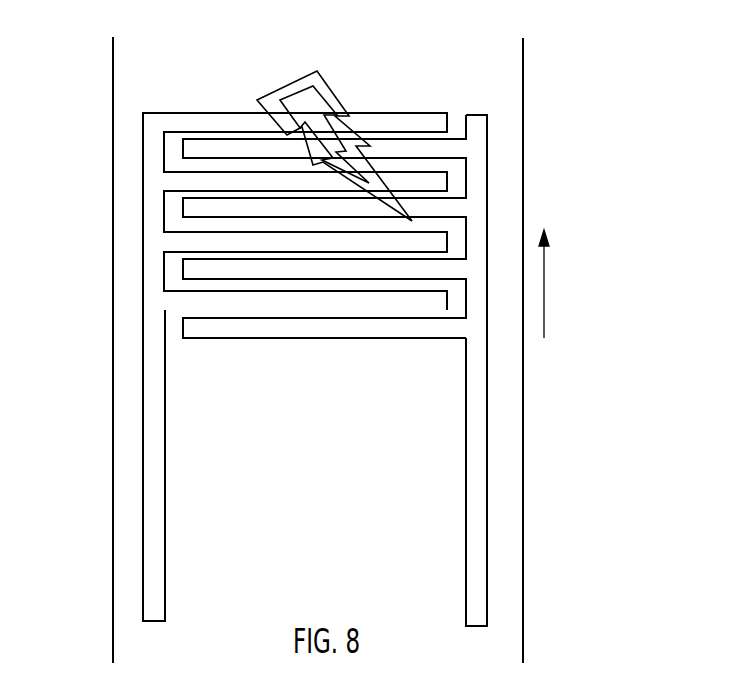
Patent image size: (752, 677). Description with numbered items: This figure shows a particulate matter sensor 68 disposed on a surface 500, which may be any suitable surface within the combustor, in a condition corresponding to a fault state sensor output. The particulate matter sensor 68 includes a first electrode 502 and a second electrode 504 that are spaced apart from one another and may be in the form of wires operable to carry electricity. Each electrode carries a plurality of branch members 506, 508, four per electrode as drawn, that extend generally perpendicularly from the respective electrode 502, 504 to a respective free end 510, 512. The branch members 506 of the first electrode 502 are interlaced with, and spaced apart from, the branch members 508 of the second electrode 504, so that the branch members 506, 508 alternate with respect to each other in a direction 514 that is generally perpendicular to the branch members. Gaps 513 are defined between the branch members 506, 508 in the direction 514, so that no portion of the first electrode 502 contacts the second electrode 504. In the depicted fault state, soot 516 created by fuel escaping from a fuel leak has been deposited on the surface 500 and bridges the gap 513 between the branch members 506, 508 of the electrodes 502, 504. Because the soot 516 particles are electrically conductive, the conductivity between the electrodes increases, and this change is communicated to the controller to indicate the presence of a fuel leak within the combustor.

The particulate matter sensor 68 is at (152, 59).
The surface 500 is at (500, 53).
The first electrode 502 is at (165, 545).
The second electrode 504 is at (467, 523).
The branch members of the first electrode 506 is at (271, 180).
The branch members of the second electrode 508 is at (333, 272).
The free end 510 is at (447, 120).
The free end 512 is at (183, 268).
The gap 513 is at (413, 133).
The direction 514 is at (544, 288).
The soot 516 is at (322, 93).